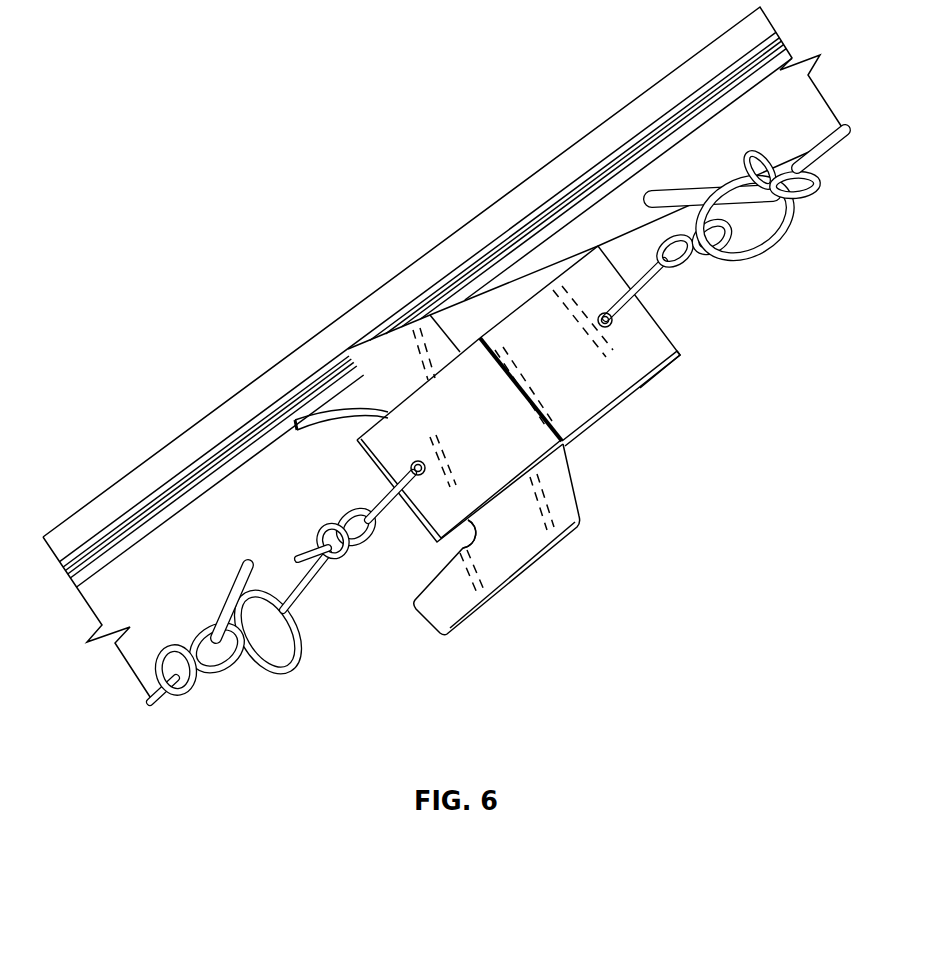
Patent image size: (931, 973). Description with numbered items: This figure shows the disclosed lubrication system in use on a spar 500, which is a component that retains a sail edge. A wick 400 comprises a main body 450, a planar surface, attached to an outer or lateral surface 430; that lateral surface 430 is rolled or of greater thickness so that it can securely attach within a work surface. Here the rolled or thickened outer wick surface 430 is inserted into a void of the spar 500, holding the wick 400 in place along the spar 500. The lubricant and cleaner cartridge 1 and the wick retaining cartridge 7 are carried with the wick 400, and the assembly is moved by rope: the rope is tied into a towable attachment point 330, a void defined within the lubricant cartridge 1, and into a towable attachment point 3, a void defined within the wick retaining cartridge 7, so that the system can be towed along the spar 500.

The spar 500 is at (648, 106).
The towable attachment point 330 is at (417, 462).
The wick retaining cartridge 7 is at (484, 444).
The lubricant and cleaner cartridge 1 is at (580, 369).
The towable attachment point 3 is at (674, 353).
The main body of wick 450 is at (564, 509).
The outer surface of wick 430 is at (553, 548).
The wick 400 is at (505, 614).